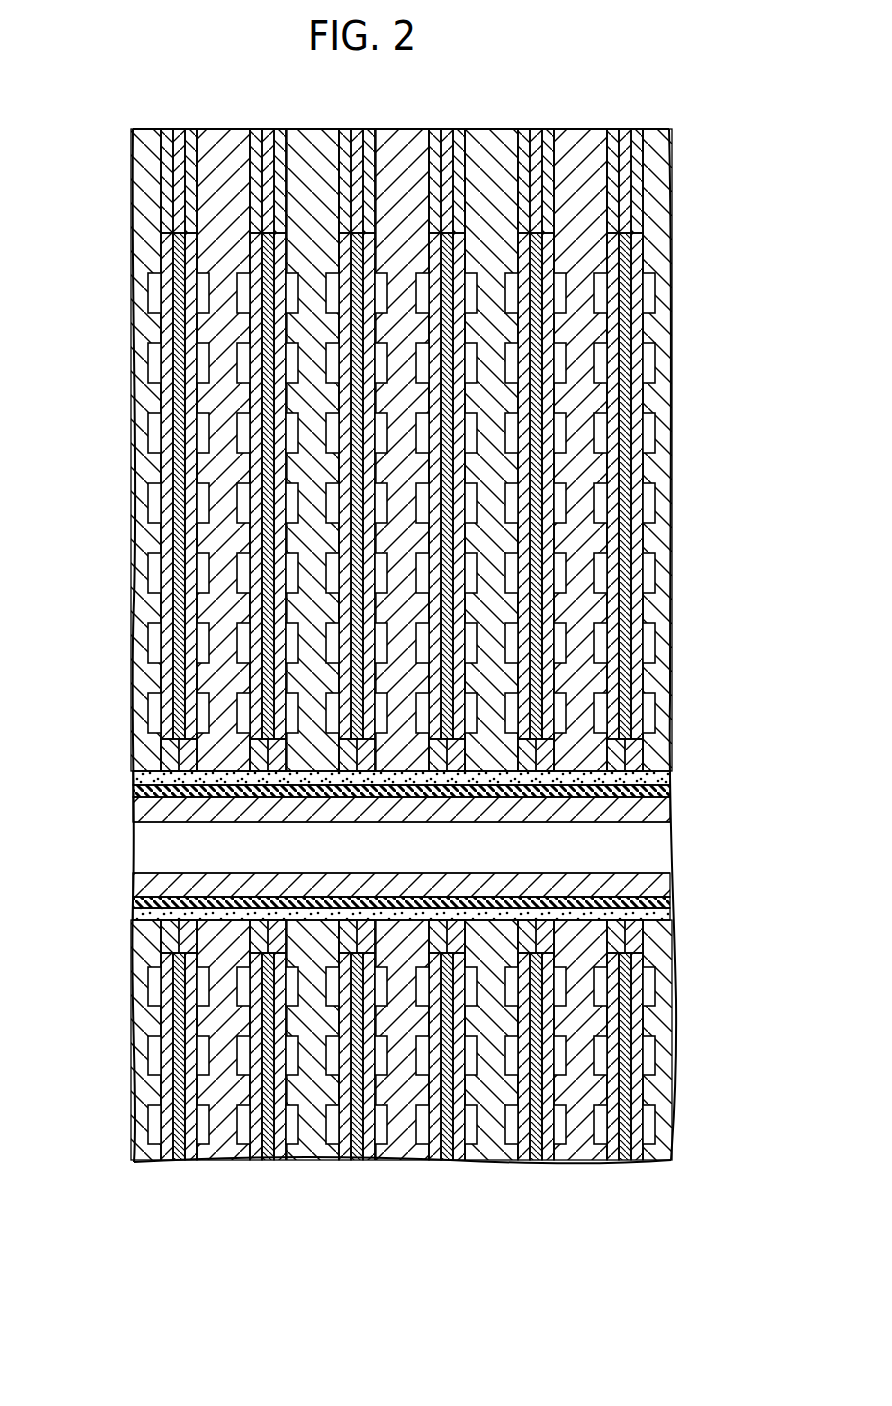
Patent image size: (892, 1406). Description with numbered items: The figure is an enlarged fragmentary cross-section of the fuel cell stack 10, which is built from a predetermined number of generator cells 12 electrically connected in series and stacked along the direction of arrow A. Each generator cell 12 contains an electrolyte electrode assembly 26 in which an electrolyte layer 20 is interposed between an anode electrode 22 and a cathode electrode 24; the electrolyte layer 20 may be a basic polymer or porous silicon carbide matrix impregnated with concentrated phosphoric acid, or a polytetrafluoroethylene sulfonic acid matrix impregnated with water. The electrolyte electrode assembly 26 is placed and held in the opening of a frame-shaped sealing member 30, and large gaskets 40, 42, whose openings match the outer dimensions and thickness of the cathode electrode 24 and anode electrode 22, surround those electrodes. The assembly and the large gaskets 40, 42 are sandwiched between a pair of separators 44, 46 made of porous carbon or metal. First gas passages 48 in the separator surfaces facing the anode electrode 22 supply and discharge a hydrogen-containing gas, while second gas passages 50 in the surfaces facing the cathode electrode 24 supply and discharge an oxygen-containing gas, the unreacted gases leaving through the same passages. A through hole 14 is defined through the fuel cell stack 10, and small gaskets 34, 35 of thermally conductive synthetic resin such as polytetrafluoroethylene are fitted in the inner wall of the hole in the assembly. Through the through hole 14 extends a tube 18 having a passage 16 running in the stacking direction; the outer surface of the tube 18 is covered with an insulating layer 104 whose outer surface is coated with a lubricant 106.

The fuel cell stack 10 is at (68, 67).
The generator cell 12 is at (205, 117).
The through hole 14 is at (645, 885).
The passage 16 is at (395, 845).
The tube 18 is at (643, 847).
The electrolyte layer 20 is at (626, 432).
The anode electrode 22 is at (613, 465).
The cathode electrode 24 is at (638, 400).
The electrolyte electrode assembly 26 is at (477, 754).
The frame-shaped sealing member 30 is at (174, 132).
The small gasket 34 is at (166, 760).
The small gasket 35 is at (633, 762).
The large gasket 40 is at (165, 147).
The large gasket 42 is at (642, 155).
The separator 44 is at (385, 150).
The separator 46 is at (482, 155).
The first gas passage 48 is at (333, 293).
The second gas passage 50 is at (418, 292).
The insulating layer 104 is at (338, 790).
The lubricant 106 is at (421, 779).